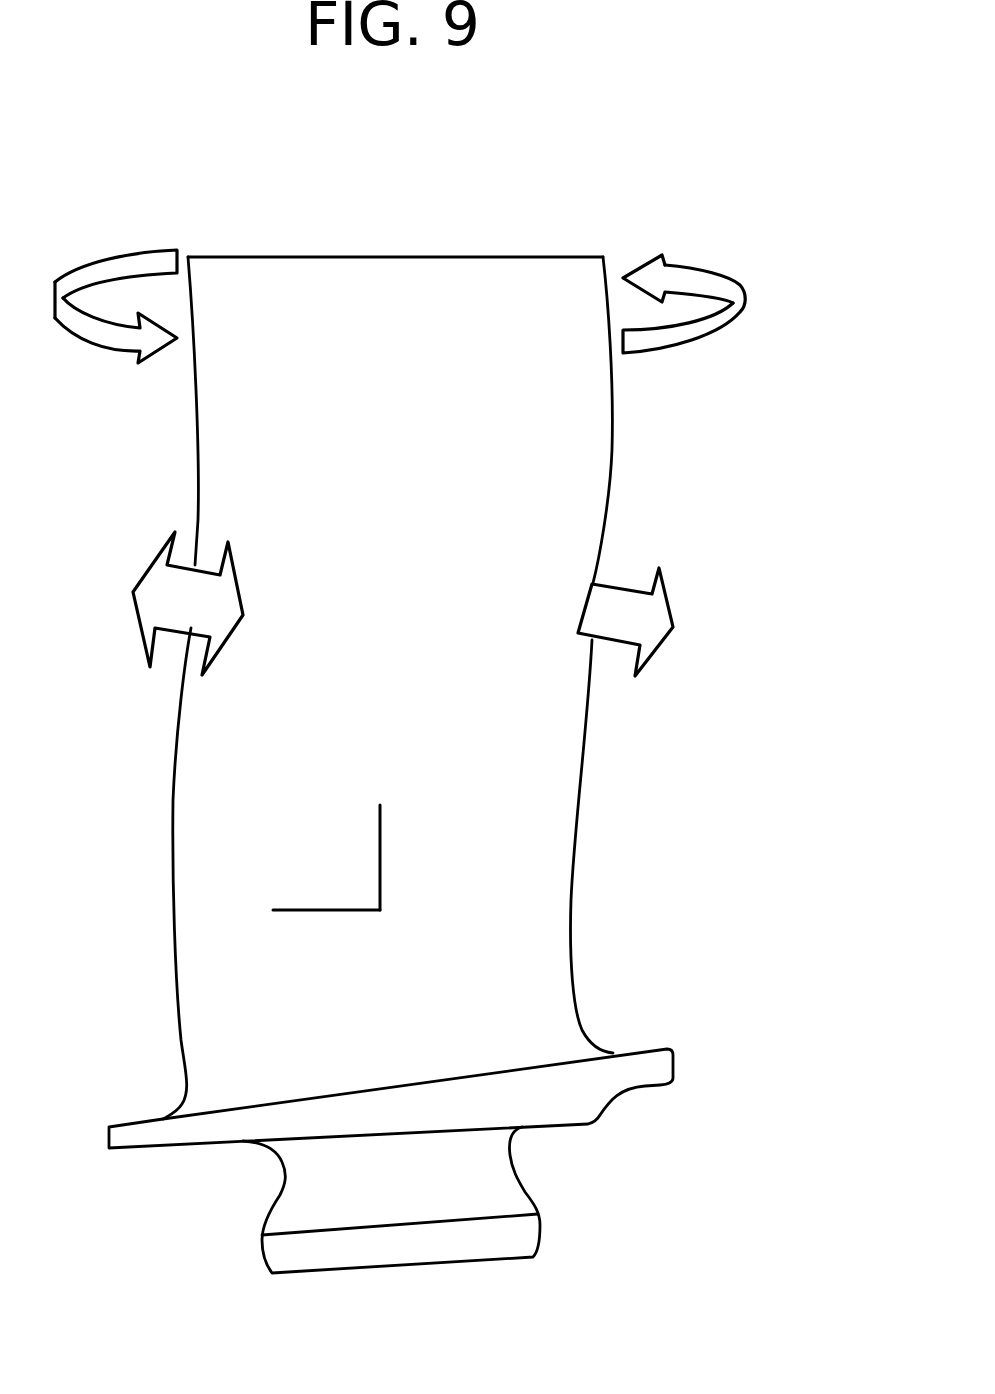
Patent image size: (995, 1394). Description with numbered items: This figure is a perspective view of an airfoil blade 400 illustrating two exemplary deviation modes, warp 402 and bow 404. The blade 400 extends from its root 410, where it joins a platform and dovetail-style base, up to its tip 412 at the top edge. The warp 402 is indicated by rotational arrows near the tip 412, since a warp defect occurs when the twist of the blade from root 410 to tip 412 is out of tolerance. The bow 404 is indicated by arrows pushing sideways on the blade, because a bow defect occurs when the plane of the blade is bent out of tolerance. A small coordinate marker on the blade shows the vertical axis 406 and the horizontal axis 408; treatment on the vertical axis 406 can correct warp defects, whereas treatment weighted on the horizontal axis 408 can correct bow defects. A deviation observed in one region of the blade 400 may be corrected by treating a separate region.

The airfoil blade 400 is at (565, 857).
The warp 402 is at (727, 272).
The bow 404 is at (627, 590).
The vertical axis 406 is at (380, 858).
The horizontal axis 408 is at (325, 912).
The root 410 is at (497, 1062).
The tip 412 is at (346, 257).